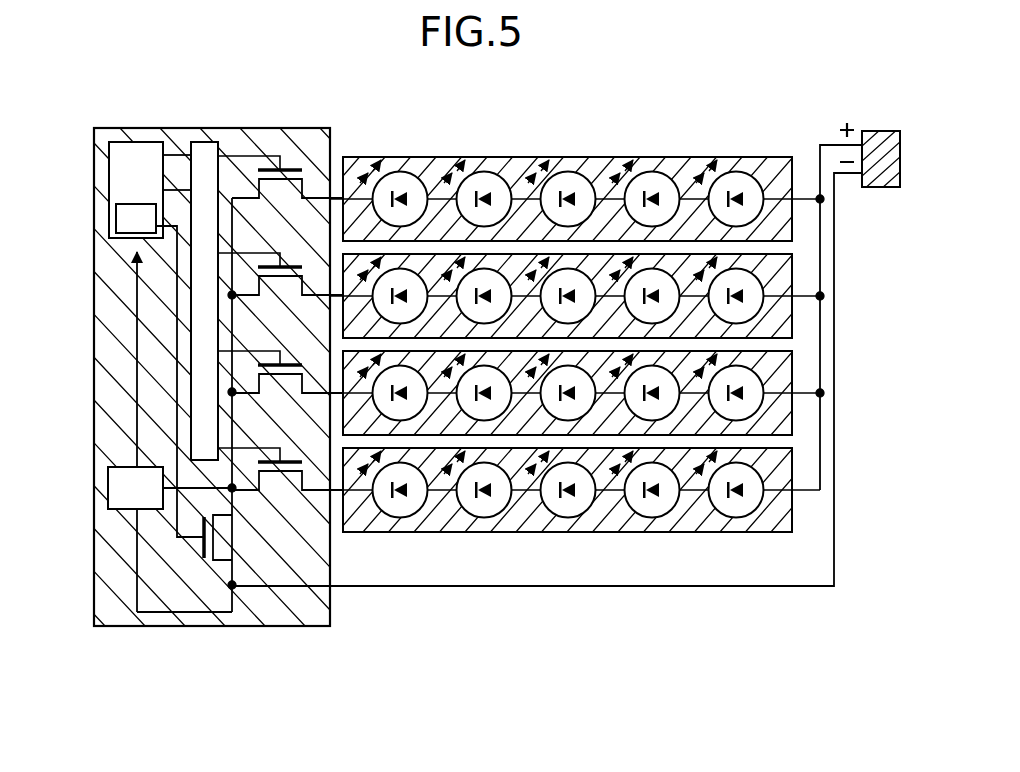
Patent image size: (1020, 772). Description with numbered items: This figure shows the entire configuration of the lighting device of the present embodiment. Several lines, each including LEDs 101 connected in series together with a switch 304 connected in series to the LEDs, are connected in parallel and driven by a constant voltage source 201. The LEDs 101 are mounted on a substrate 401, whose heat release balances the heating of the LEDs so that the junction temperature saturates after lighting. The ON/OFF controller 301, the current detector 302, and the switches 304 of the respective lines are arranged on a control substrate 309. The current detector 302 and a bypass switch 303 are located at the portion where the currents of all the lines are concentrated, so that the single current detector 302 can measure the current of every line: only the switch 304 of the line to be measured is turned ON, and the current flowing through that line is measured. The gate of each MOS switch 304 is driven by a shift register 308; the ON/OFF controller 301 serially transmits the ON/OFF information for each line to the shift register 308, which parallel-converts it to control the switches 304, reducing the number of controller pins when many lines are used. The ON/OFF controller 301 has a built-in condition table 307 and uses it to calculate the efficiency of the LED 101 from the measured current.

The LED 101 is at (652, 158).
The constant voltage source 201 is at (877, 131).
The ON/OFF controller 301 is at (123, 141).
The current detector 302 is at (108, 489).
The bypass switch 303 is at (234, 536).
The switch 304 is at (296, 162).
The condition table 307 is at (116, 220).
The shift register 308 is at (204, 142).
The control substrate 309 is at (213, 627).
The substrate 401 is at (697, 520).